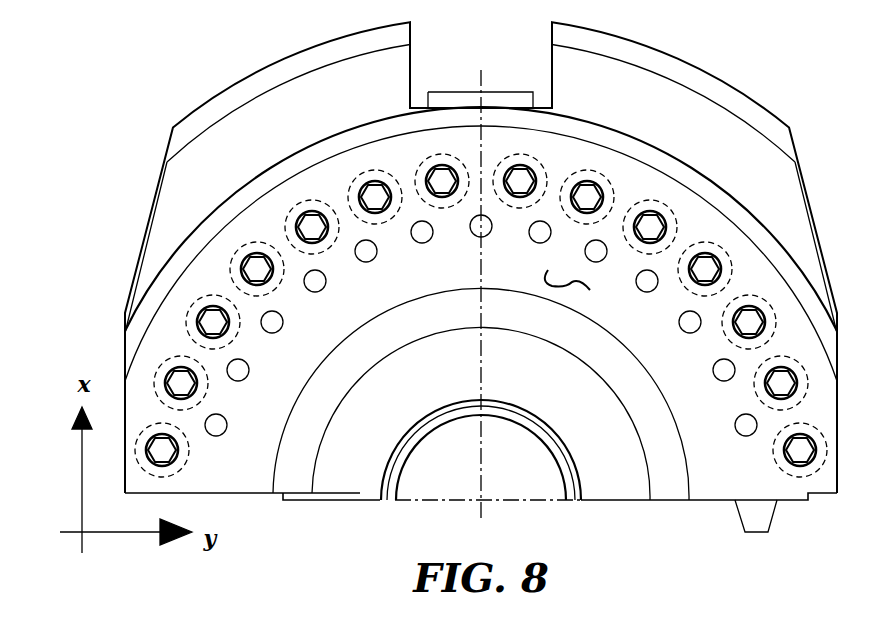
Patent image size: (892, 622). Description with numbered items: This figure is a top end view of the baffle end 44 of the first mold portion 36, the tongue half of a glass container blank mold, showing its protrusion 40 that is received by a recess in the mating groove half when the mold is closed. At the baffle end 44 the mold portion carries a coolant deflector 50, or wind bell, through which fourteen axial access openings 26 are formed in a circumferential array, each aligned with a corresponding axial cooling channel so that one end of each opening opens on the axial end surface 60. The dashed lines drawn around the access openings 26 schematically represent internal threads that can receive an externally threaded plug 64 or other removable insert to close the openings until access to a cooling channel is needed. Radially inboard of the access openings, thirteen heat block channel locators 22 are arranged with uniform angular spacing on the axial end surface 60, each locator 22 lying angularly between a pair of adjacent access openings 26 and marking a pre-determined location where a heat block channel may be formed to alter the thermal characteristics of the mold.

The first mold portion 36 is at (152, 119).
The coolant deflector 50 is at (650, 160).
The baffle end 44 is at (177, 272).
The axial access opening 26 is at (360, 188).
The externally threaded plug 64 is at (653, 218).
The heat block channel locator 22 is at (425, 244).
The axial end surface 60 is at (548, 270).
The protrusion 40 is at (760, 516).